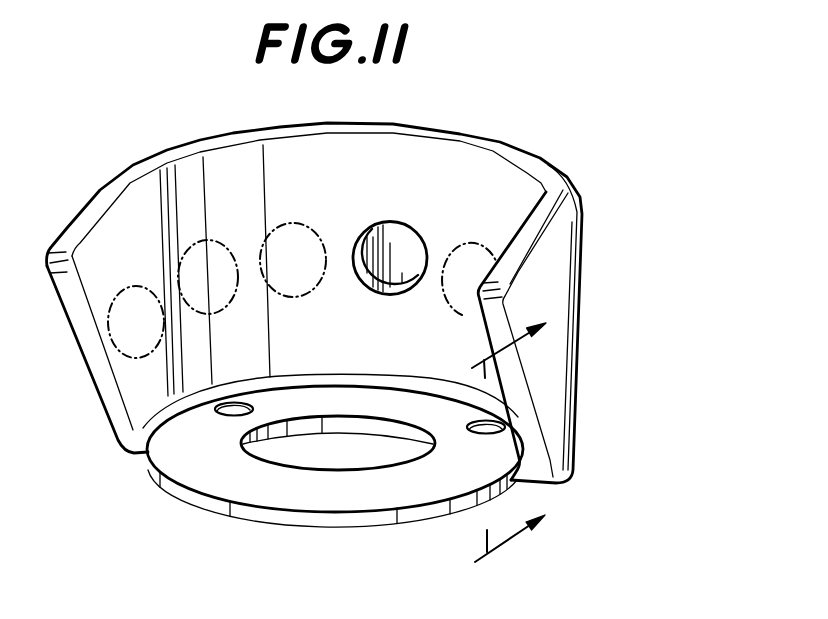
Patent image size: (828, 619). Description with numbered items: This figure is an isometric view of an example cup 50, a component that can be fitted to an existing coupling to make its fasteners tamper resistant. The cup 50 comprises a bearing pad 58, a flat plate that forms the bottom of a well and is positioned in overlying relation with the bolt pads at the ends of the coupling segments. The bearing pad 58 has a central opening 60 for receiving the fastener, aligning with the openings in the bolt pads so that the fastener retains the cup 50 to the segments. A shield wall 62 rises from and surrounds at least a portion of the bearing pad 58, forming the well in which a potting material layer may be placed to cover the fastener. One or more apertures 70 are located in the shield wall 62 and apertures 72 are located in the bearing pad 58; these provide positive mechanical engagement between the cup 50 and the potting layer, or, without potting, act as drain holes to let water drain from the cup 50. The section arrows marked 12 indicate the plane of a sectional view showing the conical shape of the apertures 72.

The section line 12- 12 is at (495, 454).
The cup 50 is at (375, 276).
The bearing pad 58 is at (335, 443).
The opening 60 is at (322, 460).
The shield wall 62 is at (492, 143).
The apertures 70 is at (388, 237).
The apertures 72 is at (248, 405).